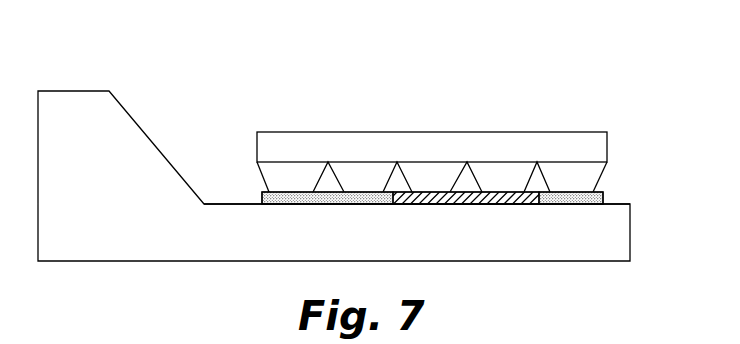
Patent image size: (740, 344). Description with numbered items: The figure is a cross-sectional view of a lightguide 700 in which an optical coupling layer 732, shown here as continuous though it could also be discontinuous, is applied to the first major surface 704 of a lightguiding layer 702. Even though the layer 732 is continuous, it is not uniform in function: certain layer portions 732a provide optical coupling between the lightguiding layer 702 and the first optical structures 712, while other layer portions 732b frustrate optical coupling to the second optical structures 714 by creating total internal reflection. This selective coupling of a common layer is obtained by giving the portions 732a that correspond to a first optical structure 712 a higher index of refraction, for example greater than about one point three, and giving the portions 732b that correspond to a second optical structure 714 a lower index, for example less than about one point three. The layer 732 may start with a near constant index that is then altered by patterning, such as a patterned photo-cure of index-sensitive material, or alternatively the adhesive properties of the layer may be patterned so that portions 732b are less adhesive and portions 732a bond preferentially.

The lightguide 700 is at (573, 58).
The lightguiding layer 702 is at (119, 243).
The first major surface 704 is at (613, 203).
The first optical structures 712 is at (348, 170).
The second optical structures 714 is at (490, 170).
The optical coupling layer 732 is at (432, 149).
The layer portions 732a is at (372, 197).
The layer portions 732b is at (433, 192).